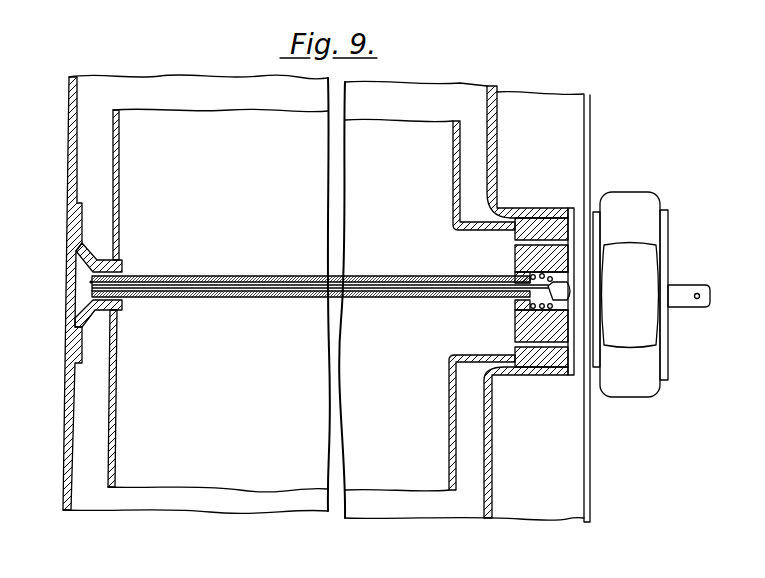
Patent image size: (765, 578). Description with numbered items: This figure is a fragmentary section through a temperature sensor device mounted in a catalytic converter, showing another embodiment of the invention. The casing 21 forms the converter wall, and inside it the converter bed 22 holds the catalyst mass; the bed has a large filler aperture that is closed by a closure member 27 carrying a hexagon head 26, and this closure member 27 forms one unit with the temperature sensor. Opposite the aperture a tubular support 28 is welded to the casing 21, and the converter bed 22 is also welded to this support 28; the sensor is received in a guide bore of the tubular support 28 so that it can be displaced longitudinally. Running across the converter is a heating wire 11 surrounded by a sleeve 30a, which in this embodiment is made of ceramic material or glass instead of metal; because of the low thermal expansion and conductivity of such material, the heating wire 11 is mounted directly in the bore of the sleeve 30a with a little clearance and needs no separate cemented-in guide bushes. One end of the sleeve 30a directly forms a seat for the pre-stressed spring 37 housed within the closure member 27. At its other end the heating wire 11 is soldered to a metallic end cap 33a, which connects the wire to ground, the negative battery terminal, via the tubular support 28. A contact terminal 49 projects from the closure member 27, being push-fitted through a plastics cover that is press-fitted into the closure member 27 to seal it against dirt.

The heating wire 11 is at (290, 288).
The casing 21 is at (488, 450).
The converter bed 22 is at (457, 407).
The hexagon head 26 is at (640, 390).
The closure member 27 is at (551, 365).
The tubular support 28 is at (92, 257).
The sleeve 30a is at (377, 298).
The metallic end cap 33a is at (90, 281).
The pre-stressed spring 37 is at (533, 273).
The contact terminal 49 is at (677, 287).